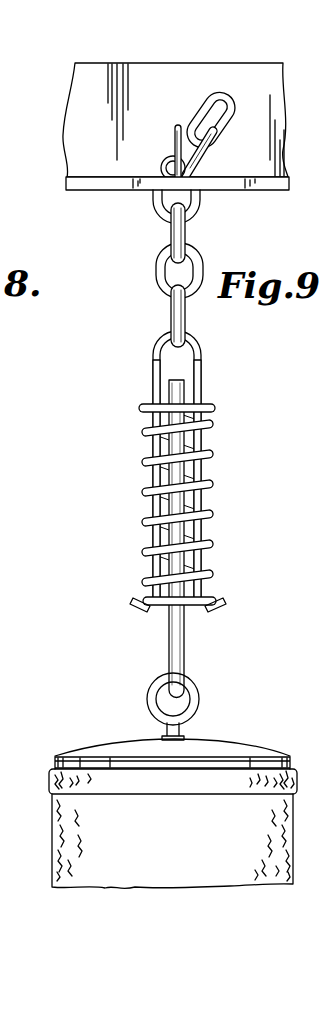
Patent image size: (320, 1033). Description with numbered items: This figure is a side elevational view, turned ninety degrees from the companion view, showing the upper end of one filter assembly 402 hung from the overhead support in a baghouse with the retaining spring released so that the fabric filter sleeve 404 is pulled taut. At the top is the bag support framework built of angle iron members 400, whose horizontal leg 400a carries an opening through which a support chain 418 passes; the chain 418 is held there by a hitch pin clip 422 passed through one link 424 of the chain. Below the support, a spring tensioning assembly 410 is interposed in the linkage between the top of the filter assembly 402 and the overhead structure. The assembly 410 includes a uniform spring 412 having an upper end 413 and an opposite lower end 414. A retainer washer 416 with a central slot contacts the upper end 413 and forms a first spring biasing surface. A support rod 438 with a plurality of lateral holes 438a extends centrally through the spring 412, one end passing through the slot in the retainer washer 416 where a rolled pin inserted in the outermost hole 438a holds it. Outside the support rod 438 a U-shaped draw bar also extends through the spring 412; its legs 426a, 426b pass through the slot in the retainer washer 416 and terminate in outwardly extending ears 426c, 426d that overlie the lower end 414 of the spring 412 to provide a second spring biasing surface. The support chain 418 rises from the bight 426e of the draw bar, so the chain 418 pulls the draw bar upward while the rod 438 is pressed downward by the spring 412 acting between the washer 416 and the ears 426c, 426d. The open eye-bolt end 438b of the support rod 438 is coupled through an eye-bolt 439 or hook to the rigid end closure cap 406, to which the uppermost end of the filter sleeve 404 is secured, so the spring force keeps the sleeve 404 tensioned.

The angle iron members 400 is at (62, 89).
The horizontal leg 400a is at (256, 191).
The hitch pin clip 422 is at (180, 127).
The link 424 is at (170, 160).
The support chain 418 is at (171, 322).
The bight 426e is at (194, 340).
The spring tensioning assembly 410 is at (169, 494).
The retainer washer 416 is at (215, 408).
The upper end 413 is at (142, 411).
The spring 412 is at (172, 529).
The leg 426a is at (155, 531).
The leg 426b is at (200, 529).
The lateral holes 438a is at (196, 505).
The support rod 438 is at (177, 622).
The open eye-bolt end 438b is at (171, 668).
The lower end 414 is at (148, 600).
The ear 426c is at (148, 606).
The ear 426d is at (210, 610).
The filter assembly 402 is at (150, 780).
The eye ring 439 is at (191, 699).
The end closure cap 406 is at (212, 746).
The filter sleeve 404 is at (56, 818).